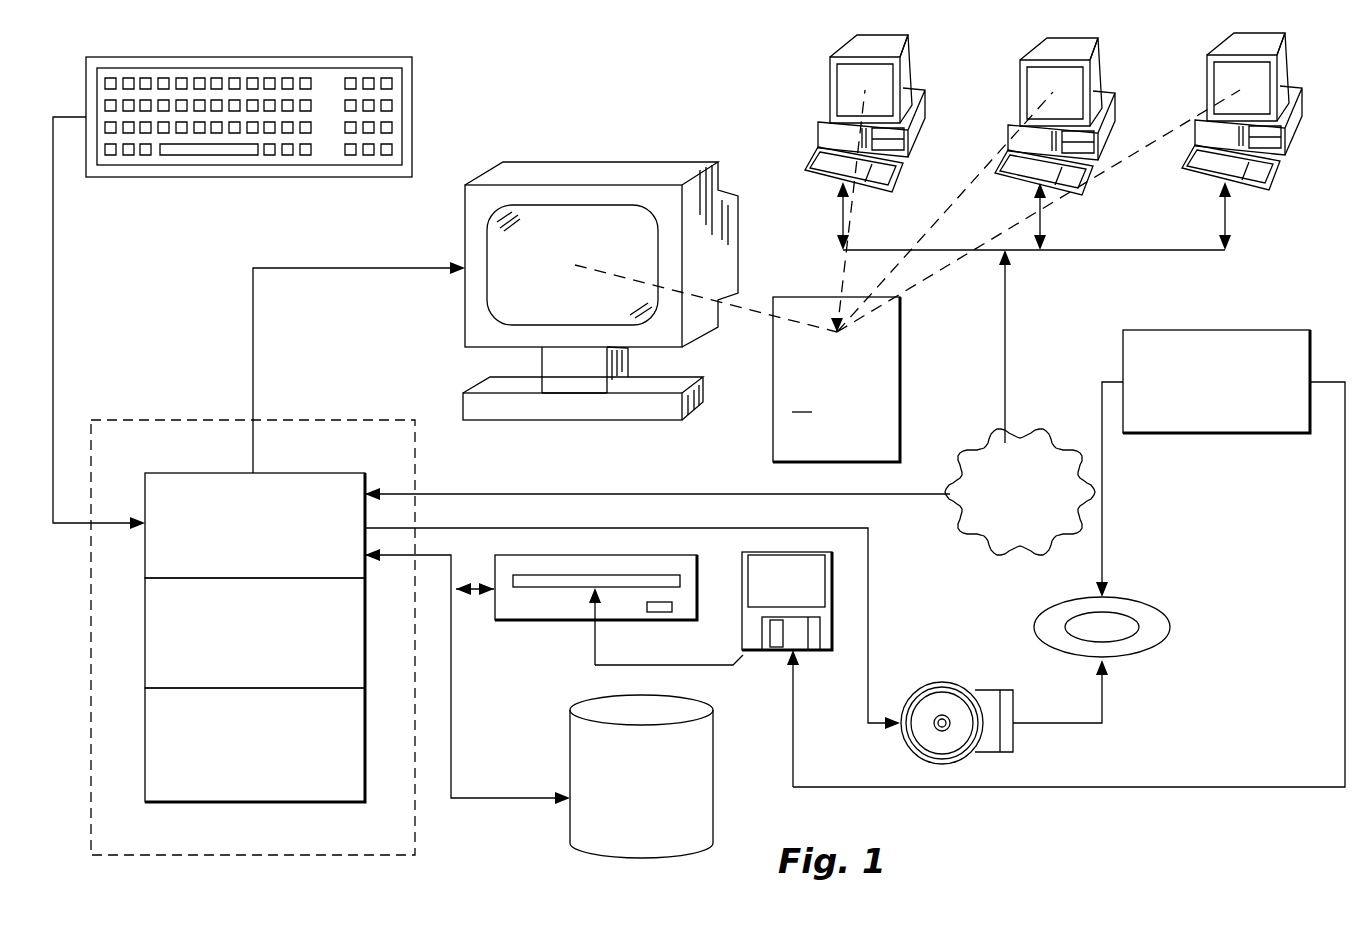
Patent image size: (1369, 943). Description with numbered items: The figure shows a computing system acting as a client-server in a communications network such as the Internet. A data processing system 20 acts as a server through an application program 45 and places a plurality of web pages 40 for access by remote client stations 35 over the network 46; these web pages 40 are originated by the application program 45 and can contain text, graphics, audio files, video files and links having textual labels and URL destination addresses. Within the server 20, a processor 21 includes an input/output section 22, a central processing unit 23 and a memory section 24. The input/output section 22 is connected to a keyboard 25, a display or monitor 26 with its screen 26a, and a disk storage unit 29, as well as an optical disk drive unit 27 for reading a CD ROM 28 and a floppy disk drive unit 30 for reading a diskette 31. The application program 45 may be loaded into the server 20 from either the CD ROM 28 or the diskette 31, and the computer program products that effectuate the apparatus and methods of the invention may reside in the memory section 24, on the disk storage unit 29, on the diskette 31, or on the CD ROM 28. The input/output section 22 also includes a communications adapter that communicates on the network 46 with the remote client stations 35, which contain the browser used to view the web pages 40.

The data processing system 20 is at (545, 733).
The processor 21 is at (253, 603).
The input/output section 22 is at (211, 473).
The central processing unit 23 is at (367, 650).
The memory section 24 is at (367, 760).
The keyboard 25 is at (415, 100).
The display or monitor 26 is at (557, 266).
The display screen 26a is at (512, 287).
The optical disk drive unit 27 is at (980, 695).
The CD ROM 28 is at (1140, 652).
The disk storage unit 29 is at (585, 825).
The floppy disk drive unit 30 is at (567, 608).
The diskette 31 is at (822, 652).
The remote client stations 35 is at (900, 88).
The web pages 40 is at (900, 412).
The application program 45 is at (1243, 335).
The network 46 is at (1020, 458).